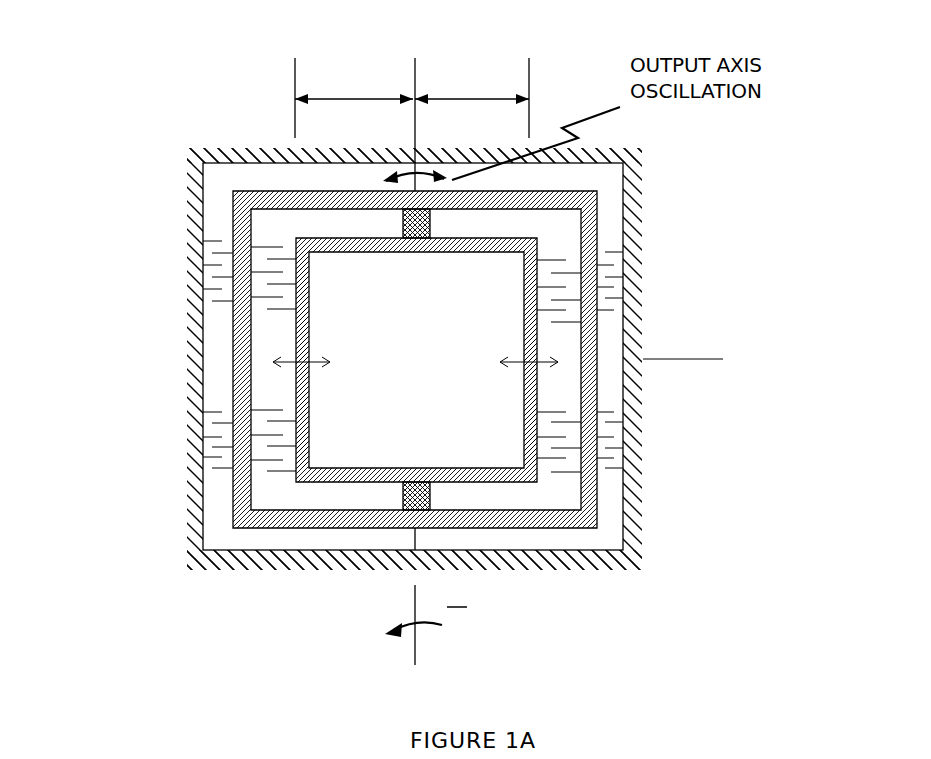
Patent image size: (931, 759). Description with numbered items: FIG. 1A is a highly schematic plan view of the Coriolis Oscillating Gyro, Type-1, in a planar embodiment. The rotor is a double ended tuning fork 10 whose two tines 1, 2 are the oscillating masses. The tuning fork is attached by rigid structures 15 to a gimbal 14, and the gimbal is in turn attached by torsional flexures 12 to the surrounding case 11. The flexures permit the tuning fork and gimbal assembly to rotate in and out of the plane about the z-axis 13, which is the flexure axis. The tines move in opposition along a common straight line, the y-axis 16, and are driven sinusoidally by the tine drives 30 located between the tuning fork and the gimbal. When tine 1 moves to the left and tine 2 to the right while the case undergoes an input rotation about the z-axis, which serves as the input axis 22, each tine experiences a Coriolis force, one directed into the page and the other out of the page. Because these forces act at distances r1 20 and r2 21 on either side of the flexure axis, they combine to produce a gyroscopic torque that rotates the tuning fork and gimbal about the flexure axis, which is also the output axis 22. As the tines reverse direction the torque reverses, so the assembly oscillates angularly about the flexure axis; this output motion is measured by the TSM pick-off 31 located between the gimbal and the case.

The tine 1 is at (312, 338).
The tine 2 is at (523, 338).
The double ended tuning fork 10 is at (540, 480).
The case 11 is at (638, 170).
The torsional flexures 12 is at (450, 181).
The z-axis 13 is at (429, 98).
The gimbal 14 is at (240, 478).
The rigid structures 15 is at (438, 221).
The y-axis 16 is at (715, 355).
The distance r1 20 is at (472, 101).
The distance r2 21 is at (354, 101).
The input axis 22 is at (497, 615).
The tine drives 30 is at (260, 258).
The TSM pick-off 31 is at (217, 413).